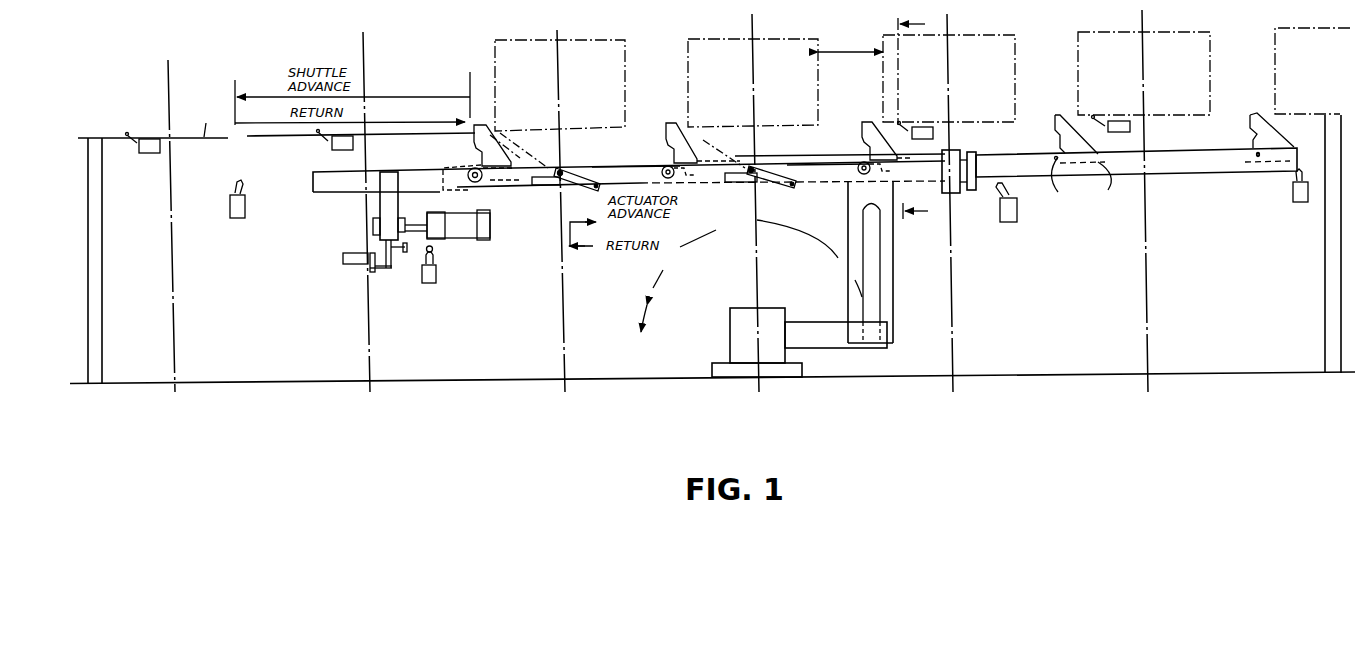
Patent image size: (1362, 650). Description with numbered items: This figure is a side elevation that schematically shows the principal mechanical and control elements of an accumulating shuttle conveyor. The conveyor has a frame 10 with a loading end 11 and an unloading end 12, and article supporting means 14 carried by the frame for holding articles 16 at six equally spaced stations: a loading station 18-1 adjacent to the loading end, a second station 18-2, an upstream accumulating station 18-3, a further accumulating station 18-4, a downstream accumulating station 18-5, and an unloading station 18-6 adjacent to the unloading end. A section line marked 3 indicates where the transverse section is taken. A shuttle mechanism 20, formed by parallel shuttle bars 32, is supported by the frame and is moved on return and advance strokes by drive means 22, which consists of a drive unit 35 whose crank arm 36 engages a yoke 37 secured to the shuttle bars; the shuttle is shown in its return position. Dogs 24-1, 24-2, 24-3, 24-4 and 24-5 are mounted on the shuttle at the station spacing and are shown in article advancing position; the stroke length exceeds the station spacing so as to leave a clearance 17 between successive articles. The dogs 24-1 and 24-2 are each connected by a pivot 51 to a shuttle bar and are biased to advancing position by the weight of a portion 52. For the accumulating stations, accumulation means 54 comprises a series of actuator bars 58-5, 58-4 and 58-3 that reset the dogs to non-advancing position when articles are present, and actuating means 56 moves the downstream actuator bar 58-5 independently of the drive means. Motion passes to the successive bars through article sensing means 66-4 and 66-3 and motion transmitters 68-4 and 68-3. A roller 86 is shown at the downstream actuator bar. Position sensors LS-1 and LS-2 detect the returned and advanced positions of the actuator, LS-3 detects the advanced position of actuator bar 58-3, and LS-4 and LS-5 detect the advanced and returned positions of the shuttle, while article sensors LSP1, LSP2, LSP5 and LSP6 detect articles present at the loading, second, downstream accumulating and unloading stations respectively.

The section line 3- 3 is at (920, 119).
The frame 10 is at (106, 290).
The loading end 11 is at (1332, 114).
The unloading end 12 is at (82, 137).
The article supporting means 14 is at (206, 120).
The article 16 is at (992, 33).
The clearance 17 is at (848, 50).
The loading station 18-1 is at (1146, 196).
The second station 18-2 is at (951, 196).
The upstream accumulating station 18-3 is at (756, 196).
The accumulating station 18-4 is at (562, 201).
The downstream accumulating station 18-5 is at (369, 202).
The unloading station 18-6 is at (175, 215).
The shuttle mechanism 20 is at (1162, 175).
The drive means 22 is at (813, 279).
The dog 24-1 is at (1252, 114).
The dog 24-2 is at (1056, 114).
The dog 24-3 is at (864, 121).
The dog 24-4 is at (669, 122).
The dog 24-5 is at (478, 124).
The shuttle bar 32 is at (1228, 174).
The drive unit 35 is at (730, 336).
The crank arm 36 is at (852, 346).
The yoke 37 is at (895, 265).
The pivot 51 is at (1063, 185).
The weighted portion 52 is at (1110, 187).
The accumulation means 54 is at (528, 190).
The actuating means 56 is at (459, 239).
The actuator bar 58-3 is at (864, 160).
The actuator bar 58-4 is at (662, 164).
The downstream actuator bar 58-5 is at (450, 171).
The article sensing means 66-3 is at (738, 106).
The article sensing means 66-4 is at (546, 114).
The motion transmitter 68-3 is at (770, 186).
The motion transmitter 68-4 is at (575, 190).
The roller 86 is at (476, 182).
The position sensor LS-1 is at (358, 270).
The position sensor LS-2 is at (425, 275).
The position sensor LS-3 is at (1005, 214).
The position sensor LS-4 is at (235, 209).
The position sensor LS-5 is at (1291, 196).
The article sensor LSP1 is at (1137, 126).
The article sensor LSP2 is at (942, 131).
The article sensor LSP5 is at (329, 148).
The article sensor LSP6 is at (136, 153).